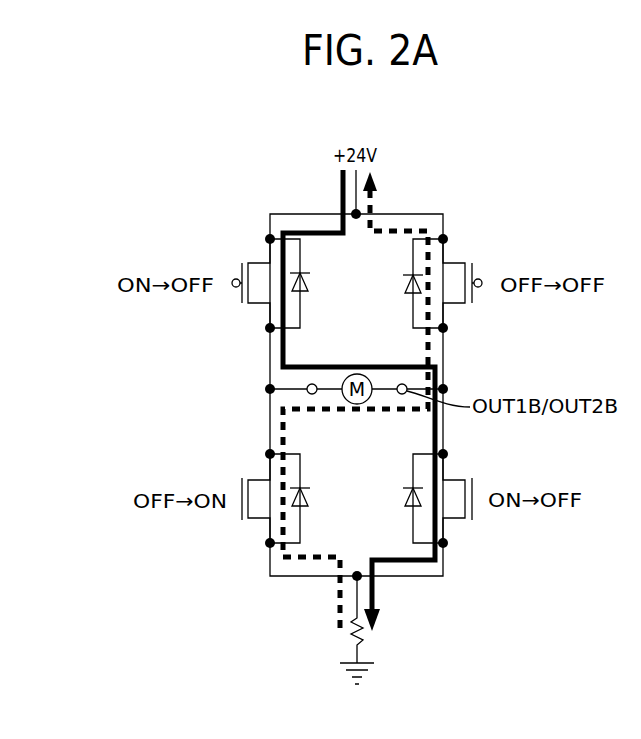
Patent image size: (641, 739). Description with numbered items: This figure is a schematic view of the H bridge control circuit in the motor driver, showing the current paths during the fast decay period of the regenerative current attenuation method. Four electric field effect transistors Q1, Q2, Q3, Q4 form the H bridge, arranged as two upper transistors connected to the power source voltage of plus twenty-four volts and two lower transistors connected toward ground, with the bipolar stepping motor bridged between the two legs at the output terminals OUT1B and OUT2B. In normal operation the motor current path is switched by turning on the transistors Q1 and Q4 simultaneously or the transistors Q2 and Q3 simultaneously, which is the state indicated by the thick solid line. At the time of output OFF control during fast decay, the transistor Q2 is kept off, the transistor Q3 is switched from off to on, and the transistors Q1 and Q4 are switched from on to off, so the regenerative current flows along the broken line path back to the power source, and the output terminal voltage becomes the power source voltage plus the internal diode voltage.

The electric field effect transistor Q1 is at (236, 263).
The electric field effect transistor Q2 is at (478, 263).
The electric field effect transistor Q3 is at (236, 521).
The electric field effect transistor Q4 is at (478, 521).